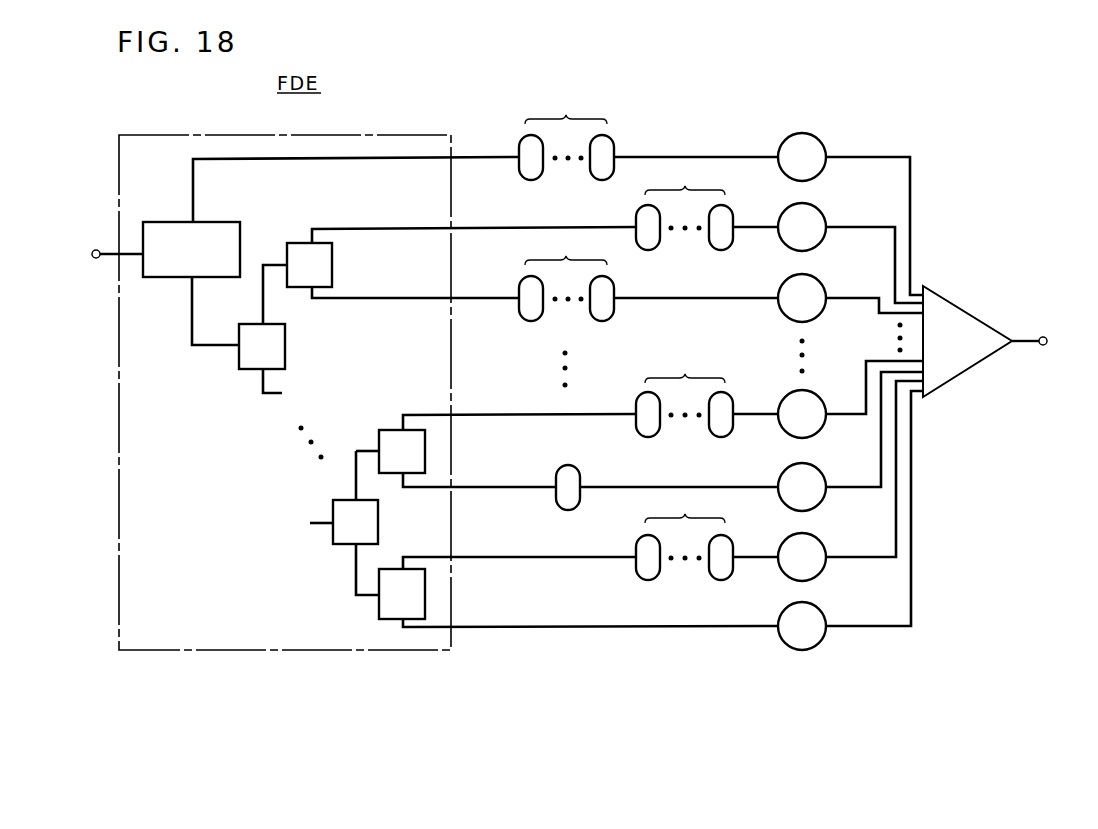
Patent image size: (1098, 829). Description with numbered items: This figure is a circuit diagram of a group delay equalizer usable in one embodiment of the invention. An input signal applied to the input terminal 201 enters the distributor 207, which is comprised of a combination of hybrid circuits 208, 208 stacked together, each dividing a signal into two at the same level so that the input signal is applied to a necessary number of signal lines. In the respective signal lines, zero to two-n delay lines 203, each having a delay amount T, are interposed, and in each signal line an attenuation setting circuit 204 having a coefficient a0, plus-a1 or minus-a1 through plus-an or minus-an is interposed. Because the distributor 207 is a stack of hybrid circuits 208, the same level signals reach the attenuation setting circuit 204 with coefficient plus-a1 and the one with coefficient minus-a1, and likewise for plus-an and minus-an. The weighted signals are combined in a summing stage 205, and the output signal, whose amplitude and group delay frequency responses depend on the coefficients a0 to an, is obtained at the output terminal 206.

The input terminal 201 is at (94, 259).
The delay element 203 is at (519, 143).
The attenuation setting circuit 204 is at (800, 134).
The summing amplifier 205 is at (962, 313).
The output terminal 206 is at (1041, 337).
The distributor 207 is at (321, 651).
The hybrid circuit 208 is at (214, 222).